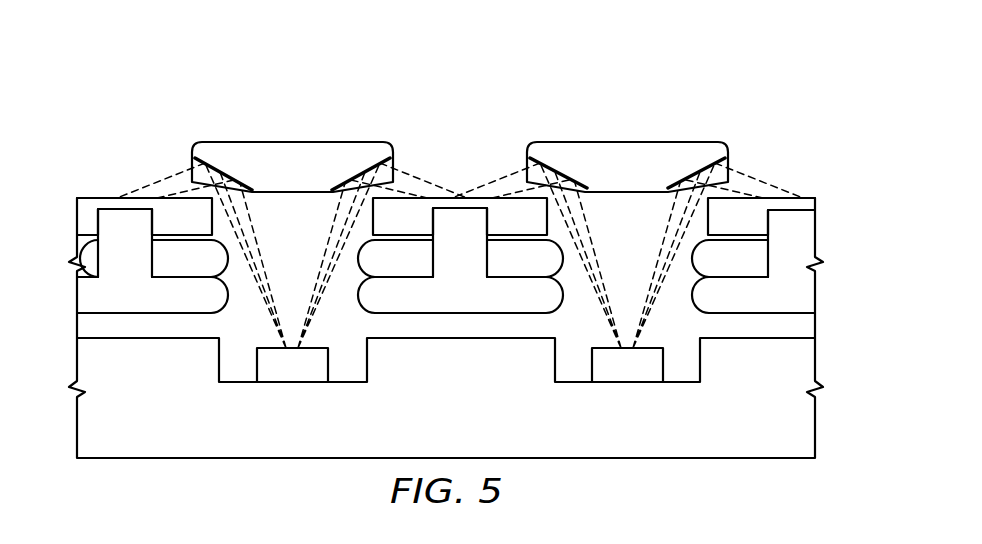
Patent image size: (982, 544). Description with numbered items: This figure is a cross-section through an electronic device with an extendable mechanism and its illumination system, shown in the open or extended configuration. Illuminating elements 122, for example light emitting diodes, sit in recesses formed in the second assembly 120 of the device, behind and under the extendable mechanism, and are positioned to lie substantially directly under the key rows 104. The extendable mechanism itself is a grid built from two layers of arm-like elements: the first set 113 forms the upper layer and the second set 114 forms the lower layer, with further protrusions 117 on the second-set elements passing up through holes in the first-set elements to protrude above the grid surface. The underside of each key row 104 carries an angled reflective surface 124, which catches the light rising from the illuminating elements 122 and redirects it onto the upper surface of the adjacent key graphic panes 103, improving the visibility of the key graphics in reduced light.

The key graphic panes 103 is at (93, 197).
The key rows 104 is at (293, 140).
The arm-like elements of the first set 113 is at (398, 262).
The arm-like elements of the second set 114 is at (522, 300).
The further protrusions 117 is at (457, 235).
The second assembly 120 is at (112, 445).
The illuminating elements 122 is at (290, 370).
The reflective surface 124 is at (220, 165).